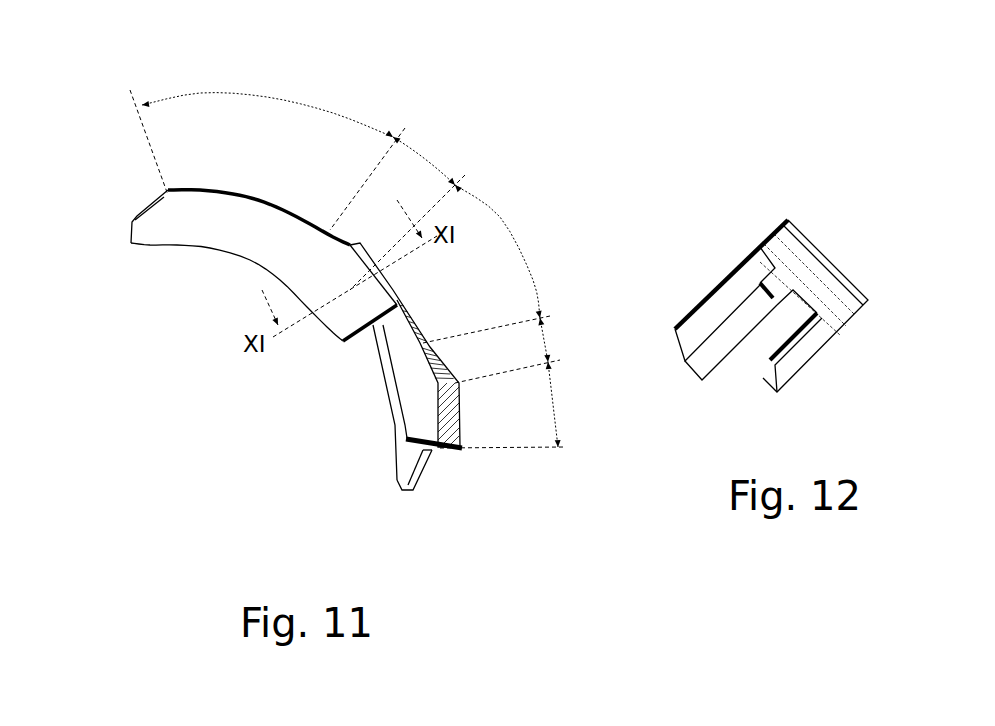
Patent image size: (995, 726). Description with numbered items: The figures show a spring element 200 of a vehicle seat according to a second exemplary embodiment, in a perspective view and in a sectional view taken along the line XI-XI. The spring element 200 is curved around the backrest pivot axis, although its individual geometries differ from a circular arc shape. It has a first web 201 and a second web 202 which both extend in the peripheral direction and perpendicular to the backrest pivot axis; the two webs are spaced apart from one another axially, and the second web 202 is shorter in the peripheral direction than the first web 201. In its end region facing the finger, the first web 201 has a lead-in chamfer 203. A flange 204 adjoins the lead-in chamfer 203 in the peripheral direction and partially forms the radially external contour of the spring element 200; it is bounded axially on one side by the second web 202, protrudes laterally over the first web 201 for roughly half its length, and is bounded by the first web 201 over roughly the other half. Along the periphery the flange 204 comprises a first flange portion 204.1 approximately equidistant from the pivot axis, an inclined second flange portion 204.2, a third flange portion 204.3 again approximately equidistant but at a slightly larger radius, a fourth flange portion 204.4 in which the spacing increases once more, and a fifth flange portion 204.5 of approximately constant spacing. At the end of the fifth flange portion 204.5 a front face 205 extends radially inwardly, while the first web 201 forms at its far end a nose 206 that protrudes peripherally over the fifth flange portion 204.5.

In FIG. 11, the spring element 200 is at (263, 225).
In FIG. 12, the spring element 200 is at (717, 270).
In FIG. 11, the first web 201 is at (153, 205).
In FIG. 12, the first web 201 is at (757, 275).
In FIG. 11, the second web 202 is at (192, 232).
In FIG. 12, the second web 202 is at (792, 365).
In FIG. 11, the lead-in chamfer 203 is at (135, 218).
In FIG. 11, the flange 204 is at (437, 410).
In FIG. 12, the flange 204 is at (810, 267).
In FIG. 11, the front face 205 is at (441, 455).
In FIG. 11, the nose 206 is at (405, 480).
In FIG. 11, the first flange portion 204.1 is at (202, 95).
In FIG. 11, the second flange portion 204.2 is at (425, 160).
In FIG. 11, the third flange portion 204.3 is at (497, 213).
In FIG. 11, the fourth flange portion 204.4 is at (545, 340).
In FIG. 11, the fifth flange portion 204.5 is at (562, 417).